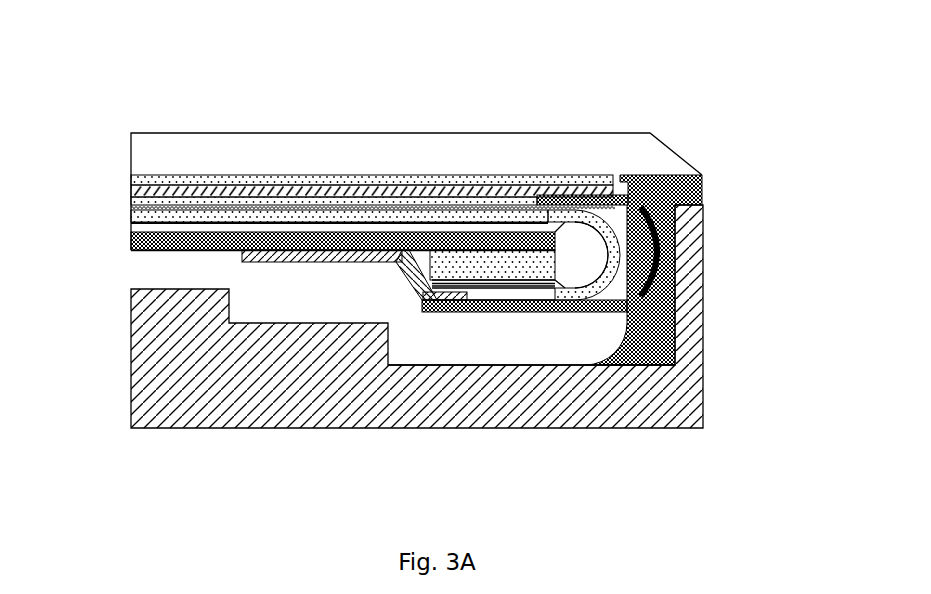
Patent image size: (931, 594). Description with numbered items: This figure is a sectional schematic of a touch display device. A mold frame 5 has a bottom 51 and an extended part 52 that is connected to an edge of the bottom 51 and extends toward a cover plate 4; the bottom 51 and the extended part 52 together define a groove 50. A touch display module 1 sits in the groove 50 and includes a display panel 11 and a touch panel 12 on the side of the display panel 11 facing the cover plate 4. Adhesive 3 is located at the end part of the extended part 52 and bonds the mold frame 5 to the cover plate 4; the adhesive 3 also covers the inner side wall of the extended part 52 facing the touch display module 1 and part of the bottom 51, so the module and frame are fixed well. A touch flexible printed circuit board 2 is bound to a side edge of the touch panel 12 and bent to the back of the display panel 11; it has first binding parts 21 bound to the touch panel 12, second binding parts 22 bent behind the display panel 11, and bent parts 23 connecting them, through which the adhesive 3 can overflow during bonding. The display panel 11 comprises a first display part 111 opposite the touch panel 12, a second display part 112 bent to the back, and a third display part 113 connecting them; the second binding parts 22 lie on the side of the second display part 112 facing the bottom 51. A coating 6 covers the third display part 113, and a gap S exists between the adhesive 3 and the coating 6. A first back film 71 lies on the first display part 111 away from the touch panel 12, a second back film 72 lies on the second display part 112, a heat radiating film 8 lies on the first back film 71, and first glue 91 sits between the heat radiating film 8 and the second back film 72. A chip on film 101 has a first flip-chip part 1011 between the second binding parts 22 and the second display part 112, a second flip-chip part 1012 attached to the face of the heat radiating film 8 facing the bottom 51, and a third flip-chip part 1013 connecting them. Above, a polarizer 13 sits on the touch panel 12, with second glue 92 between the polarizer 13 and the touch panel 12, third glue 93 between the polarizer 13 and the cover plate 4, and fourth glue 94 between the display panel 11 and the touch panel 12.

The touch display module 1 is at (115, 182).
The cover plate 4 is at (181, 151).
The third glue 93 is at (224, 180).
The polarizer 13 is at (282, 190).
The second glue 92 is at (338, 204).
The touch panel 12 is at (403, 207).
The fourth glue 94 is at (456, 216).
The display panel 11 is at (375, 199).
The first display part 111 is at (338, 224).
The third display part 113 is at (613, 247).
The second display part 112 is at (533, 292).
The first binding parts 21 is at (612, 193).
The second binding parts 22 is at (585, 308).
The touch flexible printed circuit board 2 is at (726, 285).
The bent parts 23 is at (690, 253).
The adhesive 3 is at (702, 187).
The gap S is at (622, 301).
The heat radiating film 8 is at (182, 247).
The first back film 71 is at (143, 250).
The second back film 72 is at (515, 283).
The coating 6 is at (566, 288).
The first glue 91 is at (497, 268).
The chip on film 101 is at (312, 274).
The first flip-chip part 1011 is at (283, 257).
The second flip-chip part 1012 is at (446, 297).
The third flip-chip part 1013 is at (407, 282).
The mold frame 5 is at (462, 341).
The extended part 52 is at (690, 327).
The bottom 51 is at (687, 392).
The groove 50 is at (525, 367).